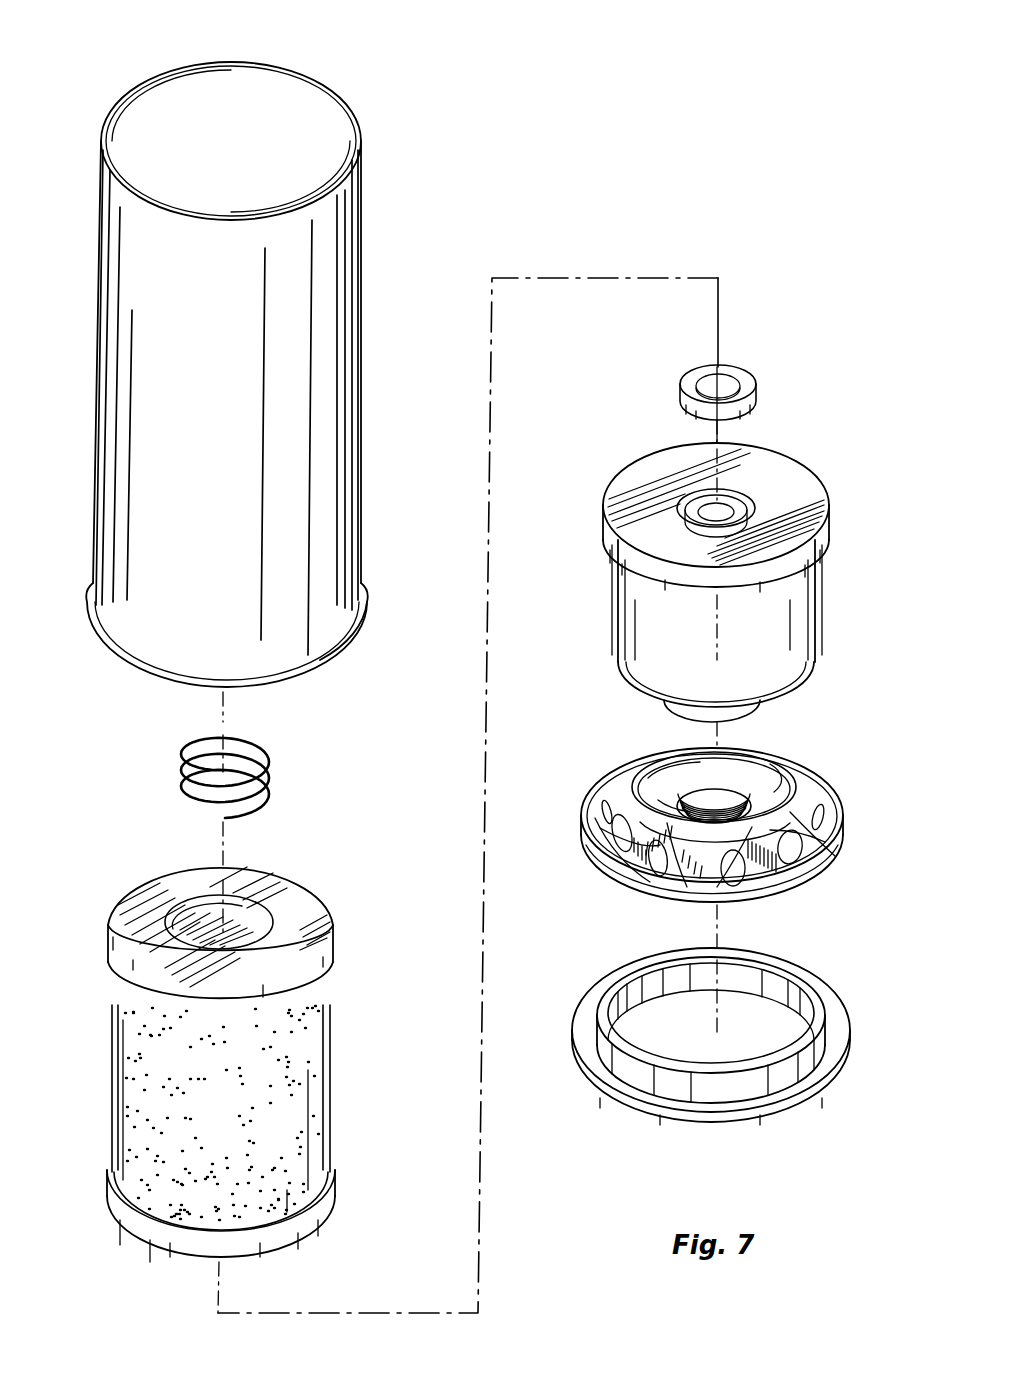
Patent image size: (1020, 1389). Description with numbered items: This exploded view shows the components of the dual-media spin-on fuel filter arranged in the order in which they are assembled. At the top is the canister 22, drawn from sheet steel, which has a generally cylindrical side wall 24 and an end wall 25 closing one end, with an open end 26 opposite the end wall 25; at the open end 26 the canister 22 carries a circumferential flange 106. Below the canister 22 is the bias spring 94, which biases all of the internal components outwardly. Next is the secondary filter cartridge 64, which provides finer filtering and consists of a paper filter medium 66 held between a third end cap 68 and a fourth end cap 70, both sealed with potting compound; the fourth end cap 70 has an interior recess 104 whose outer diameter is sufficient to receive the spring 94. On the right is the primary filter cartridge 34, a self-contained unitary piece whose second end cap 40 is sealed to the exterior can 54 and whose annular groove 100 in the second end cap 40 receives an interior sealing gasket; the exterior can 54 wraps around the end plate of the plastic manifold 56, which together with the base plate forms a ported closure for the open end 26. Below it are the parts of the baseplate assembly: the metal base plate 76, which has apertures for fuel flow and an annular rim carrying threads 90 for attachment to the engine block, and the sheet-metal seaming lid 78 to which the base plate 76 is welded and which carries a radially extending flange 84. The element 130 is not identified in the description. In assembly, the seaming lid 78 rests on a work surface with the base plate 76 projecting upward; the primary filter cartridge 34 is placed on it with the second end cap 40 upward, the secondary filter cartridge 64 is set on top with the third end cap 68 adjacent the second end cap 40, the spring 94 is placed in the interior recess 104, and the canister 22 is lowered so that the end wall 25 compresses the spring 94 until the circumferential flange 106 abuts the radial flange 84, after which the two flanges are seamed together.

The canister 22 is at (393, 213).
The side wall 24 is at (214, 460).
The end wall 25 is at (265, 110).
The open end 26 is at (113, 653).
The circumferential flange 106 is at (352, 635).
The bias spring 94 is at (283, 762).
The secondary filter cartridge 64 is at (335, 1055).
The fourth end cap 70 is at (323, 920).
The interior recess 104 is at (248, 937).
The paper filter medium 66 is at (239, 1115).
The third end cap 68 is at (285, 1238).
The primary filter cartridge 34 is at (827, 612).
The second end cap 40 is at (643, 472).
The annular groove 100 is at (748, 508).
The exterior can 54 is at (737, 657).
The manifold 56 is at (677, 710).
The base plate 76 is at (837, 782).
The threads 90 is at (723, 802).
The flow apertures 130 is at (808, 847).
The seaming lid 78 is at (598, 996).
The radially extending flange 84 is at (640, 1097).